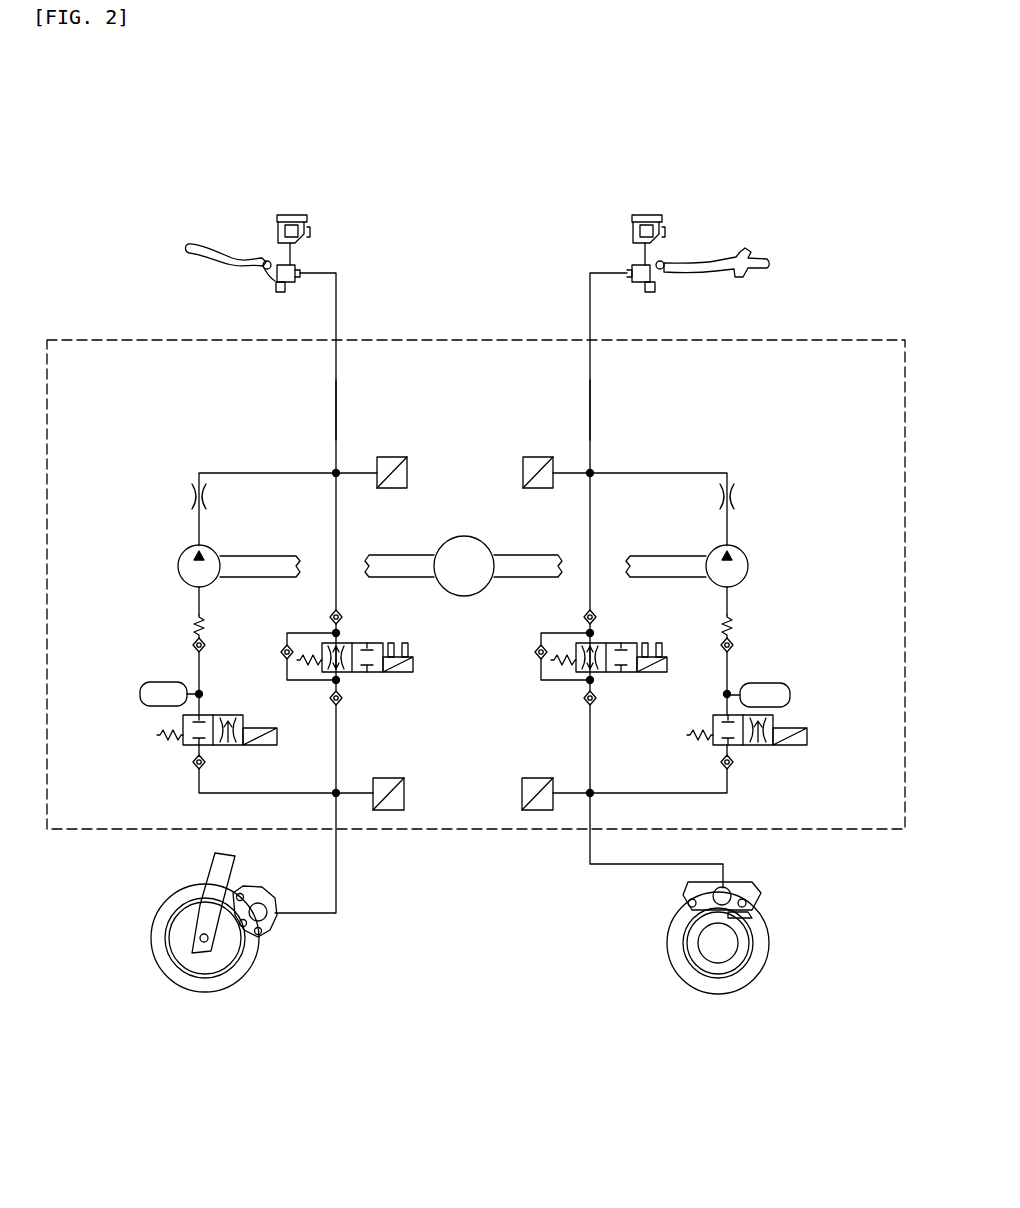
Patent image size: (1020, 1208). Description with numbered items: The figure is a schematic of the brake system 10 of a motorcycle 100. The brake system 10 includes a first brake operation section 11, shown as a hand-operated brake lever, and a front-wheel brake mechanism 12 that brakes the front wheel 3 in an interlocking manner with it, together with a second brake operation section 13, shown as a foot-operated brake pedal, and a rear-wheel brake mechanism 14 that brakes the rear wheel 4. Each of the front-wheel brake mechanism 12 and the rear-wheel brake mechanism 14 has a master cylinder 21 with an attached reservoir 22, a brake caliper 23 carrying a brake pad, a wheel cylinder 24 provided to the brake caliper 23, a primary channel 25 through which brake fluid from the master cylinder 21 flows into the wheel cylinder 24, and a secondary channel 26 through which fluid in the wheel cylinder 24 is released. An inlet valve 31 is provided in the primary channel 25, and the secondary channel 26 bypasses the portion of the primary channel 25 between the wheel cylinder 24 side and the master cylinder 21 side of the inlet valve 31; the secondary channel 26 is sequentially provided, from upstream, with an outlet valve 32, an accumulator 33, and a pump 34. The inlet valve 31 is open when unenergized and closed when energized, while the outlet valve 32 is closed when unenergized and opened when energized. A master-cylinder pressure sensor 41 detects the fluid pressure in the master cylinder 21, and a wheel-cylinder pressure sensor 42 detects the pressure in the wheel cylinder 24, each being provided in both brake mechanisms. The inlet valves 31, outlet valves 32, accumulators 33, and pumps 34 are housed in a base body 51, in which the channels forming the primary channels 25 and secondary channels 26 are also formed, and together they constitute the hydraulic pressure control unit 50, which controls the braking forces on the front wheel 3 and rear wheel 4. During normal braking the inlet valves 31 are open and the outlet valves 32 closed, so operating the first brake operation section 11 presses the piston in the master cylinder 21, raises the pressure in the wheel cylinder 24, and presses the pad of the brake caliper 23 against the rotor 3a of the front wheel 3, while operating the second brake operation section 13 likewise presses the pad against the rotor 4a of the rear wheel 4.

The motorcycle 100 is at (888, 109).
The front wheel 3 is at (207, 1006).
The rotor of the front wheel 3a is at (245, 966).
The rear wheel 4 is at (720, 1008).
The rotor of the rear wheel 4a is at (680, 968).
The brake system 10 is at (146, 233).
The first brake operation section 11 is at (208, 251).
The front-wheel brake mechanism 12 is at (371, 160).
The second brake operation section 13 is at (746, 258).
The rear-wheel brake mechanism 14 is at (561, 163).
The master cylinder 21 is at (289, 284).
The reservoir 22 is at (289, 214).
The brake caliper 23 is at (258, 896).
The wheel cylinder 24 is at (283, 920).
The primary channel 25 is at (335, 408).
The secondary channel 26 is at (265, 472).
The inlet valve 31 is at (370, 674).
The outlet valve 32 is at (228, 714).
The accumulator 33 is at (160, 681).
The pump 34 is at (177, 566).
The master-cylinder pressure sensor 41 is at (408, 474).
The wheel-cylinder pressure sensor 42 is at (405, 800).
The hydraulic pressure control unit 50 is at (797, 264).
The base body 51 is at (77, 339).